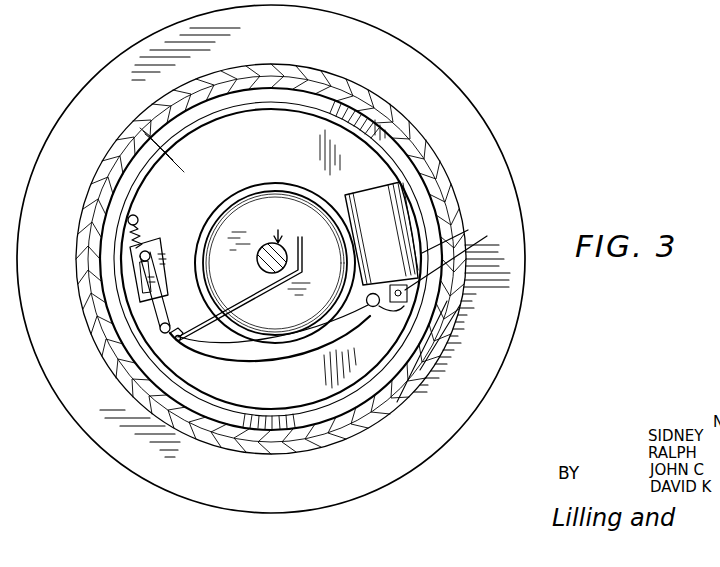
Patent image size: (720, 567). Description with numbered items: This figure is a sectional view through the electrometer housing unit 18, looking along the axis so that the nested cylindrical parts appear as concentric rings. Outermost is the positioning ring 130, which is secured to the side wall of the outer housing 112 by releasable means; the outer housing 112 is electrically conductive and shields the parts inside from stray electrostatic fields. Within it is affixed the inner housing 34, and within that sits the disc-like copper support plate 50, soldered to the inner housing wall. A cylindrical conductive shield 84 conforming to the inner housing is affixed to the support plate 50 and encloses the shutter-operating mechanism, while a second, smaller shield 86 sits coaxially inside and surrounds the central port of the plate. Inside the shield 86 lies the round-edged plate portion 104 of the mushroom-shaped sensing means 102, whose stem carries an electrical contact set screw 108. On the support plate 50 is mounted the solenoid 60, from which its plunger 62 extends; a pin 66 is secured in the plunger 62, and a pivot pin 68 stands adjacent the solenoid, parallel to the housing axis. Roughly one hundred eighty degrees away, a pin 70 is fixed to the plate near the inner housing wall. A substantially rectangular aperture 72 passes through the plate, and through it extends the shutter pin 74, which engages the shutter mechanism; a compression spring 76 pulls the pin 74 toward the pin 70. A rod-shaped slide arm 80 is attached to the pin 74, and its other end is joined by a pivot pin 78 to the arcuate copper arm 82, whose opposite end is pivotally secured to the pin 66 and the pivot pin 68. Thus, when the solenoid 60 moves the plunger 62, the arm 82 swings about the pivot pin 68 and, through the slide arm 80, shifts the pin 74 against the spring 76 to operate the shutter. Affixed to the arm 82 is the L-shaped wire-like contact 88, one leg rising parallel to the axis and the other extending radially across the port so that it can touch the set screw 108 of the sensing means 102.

The housing unit 18 is at (445, 66).
The inner housing 34 is at (426, 381).
The support plate 50 is at (367, 160).
The solenoid 60 is at (392, 210).
The plunger 62 is at (468, 298).
The pin 66 is at (452, 250).
The pivot pin 68 is at (376, 308).
The pin 70 is at (140, 222).
The rectangular aperture 72 is at (151, 254).
The pin 74 is at (132, 258).
The compression spring 76 is at (136, 240).
The pivot pin 78 is at (160, 332).
The slide arm 80 is at (157, 310).
The arm 82 is at (256, 350).
The shield 84 is at (343, 120).
The shield 86 is at (222, 200).
The contact 88 is at (311, 222).
The sensing means 102 is at (290, 222).
The plate portion 104 is at (250, 274).
The electrical contact set screw 108 is at (268, 277).
The outer housing 112 is at (250, 65).
The ring 130 is at (342, 56).